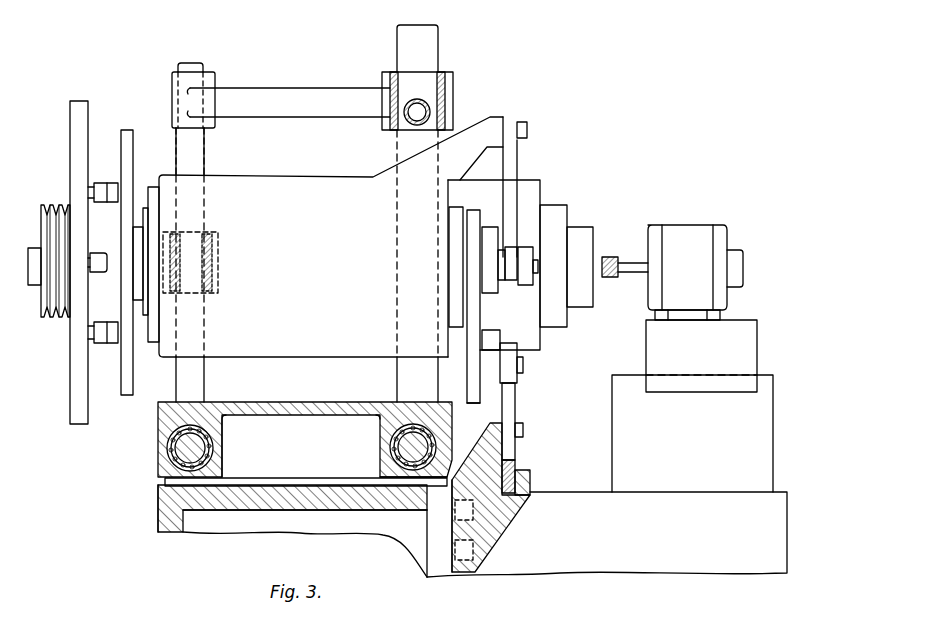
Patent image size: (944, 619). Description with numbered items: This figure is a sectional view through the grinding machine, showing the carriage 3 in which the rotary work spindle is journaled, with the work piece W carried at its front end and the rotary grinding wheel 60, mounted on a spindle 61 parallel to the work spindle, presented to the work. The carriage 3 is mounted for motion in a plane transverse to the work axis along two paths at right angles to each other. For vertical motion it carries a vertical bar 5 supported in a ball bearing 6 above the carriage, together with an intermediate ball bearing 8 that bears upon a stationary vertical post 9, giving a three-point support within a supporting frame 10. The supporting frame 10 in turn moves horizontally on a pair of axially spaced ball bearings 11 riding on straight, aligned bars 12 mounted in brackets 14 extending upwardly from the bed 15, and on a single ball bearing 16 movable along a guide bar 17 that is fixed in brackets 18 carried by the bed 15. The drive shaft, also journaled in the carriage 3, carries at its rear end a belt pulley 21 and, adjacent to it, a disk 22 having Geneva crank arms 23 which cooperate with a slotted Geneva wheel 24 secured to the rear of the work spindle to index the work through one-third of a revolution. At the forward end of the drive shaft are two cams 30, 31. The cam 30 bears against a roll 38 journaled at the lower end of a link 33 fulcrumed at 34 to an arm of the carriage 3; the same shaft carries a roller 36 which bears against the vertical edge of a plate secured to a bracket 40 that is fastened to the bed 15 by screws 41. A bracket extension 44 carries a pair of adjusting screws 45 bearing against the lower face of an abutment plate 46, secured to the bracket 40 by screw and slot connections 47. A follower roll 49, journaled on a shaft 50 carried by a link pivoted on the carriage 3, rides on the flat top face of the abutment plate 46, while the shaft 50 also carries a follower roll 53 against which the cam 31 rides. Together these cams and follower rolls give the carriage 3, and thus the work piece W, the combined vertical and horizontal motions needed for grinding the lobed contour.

The carriage 3 is at (292, 180).
The vertical bar 5 is at (434, 48).
The ball bearing 6 is at (452, 98).
The intermediate ball bearing 8 is at (218, 263).
The stationary vertical post 9 is at (196, 159).
The supporting frame 10 is at (306, 96).
The ball bearings 11 is at (392, 436).
The bars 12 is at (392, 455).
The brackets 14 is at (410, 508).
The bed 15 is at (590, 488).
The single ball bearing 16 is at (172, 445).
The guide bar 17 is at (168, 482).
The brackets 18 is at (180, 488).
The belt pulley 21 is at (54, 205).
The disk 22 is at (78, 128).
The Geneva crank arms 23 is at (96, 258).
The slotted Geneva wheel 24 is at (98, 182).
The cam 30 is at (489, 228).
The cam 31 is at (473, 210).
The link 33 is at (518, 170).
The fulcrum 34 is at (528, 130).
The roller 36 is at (523, 248).
The roll 38 is at (487, 262).
The bracket 40 is at (524, 509).
The screws 41 is at (490, 543).
The bracket extension 44 is at (530, 483).
The adjusting screws 45 is at (516, 466).
The abutment plate 46 is at (516, 411).
The screw and slot connections 47 is at (524, 433).
The follower roll 49 is at (517, 378).
The shaft 50 is at (525, 366).
The follower roll 53 is at (470, 380).
The rotary grinding wheel 60 is at (611, 257).
The spindle 61 is at (640, 273).
The work piece W is at (591, 233).